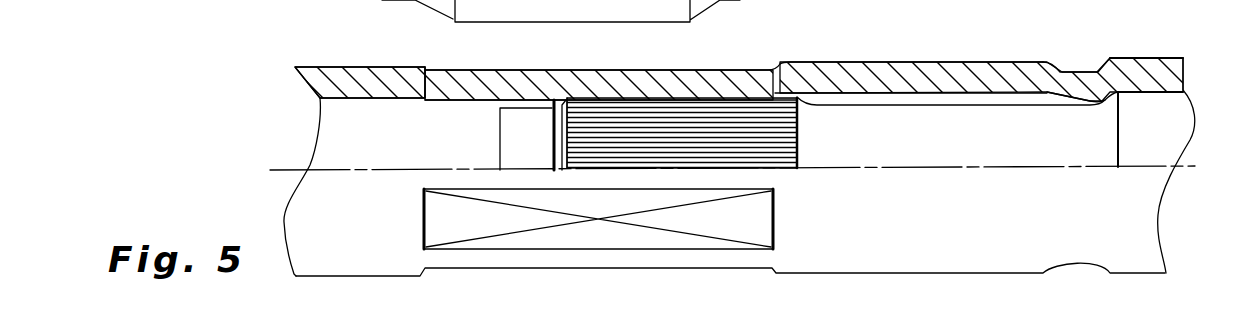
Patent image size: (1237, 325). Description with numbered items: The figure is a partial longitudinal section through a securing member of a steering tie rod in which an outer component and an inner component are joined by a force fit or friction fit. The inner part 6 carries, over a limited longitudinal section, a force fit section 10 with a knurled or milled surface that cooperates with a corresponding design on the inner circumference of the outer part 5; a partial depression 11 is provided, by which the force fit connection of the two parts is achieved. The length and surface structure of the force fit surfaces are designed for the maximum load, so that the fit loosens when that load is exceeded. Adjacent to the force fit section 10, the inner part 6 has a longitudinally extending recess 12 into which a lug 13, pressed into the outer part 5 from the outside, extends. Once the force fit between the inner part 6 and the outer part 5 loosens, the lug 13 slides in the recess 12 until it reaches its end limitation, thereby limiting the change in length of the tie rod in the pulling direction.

The outer part 5 is at (375, 81).
The inner part 6 is at (1147, 142).
The force fit section 10 is at (750, 150).
The partial depression 11 is at (452, 70).
The longitudinally extending recess 12 is at (910, 98).
The lug 13 is at (1080, 68).